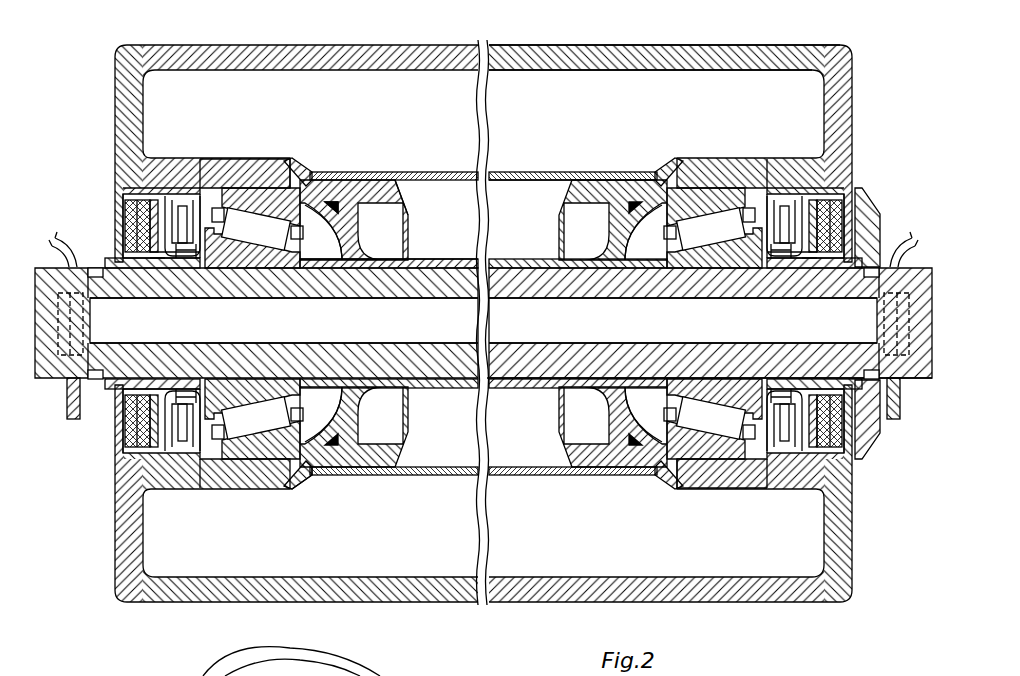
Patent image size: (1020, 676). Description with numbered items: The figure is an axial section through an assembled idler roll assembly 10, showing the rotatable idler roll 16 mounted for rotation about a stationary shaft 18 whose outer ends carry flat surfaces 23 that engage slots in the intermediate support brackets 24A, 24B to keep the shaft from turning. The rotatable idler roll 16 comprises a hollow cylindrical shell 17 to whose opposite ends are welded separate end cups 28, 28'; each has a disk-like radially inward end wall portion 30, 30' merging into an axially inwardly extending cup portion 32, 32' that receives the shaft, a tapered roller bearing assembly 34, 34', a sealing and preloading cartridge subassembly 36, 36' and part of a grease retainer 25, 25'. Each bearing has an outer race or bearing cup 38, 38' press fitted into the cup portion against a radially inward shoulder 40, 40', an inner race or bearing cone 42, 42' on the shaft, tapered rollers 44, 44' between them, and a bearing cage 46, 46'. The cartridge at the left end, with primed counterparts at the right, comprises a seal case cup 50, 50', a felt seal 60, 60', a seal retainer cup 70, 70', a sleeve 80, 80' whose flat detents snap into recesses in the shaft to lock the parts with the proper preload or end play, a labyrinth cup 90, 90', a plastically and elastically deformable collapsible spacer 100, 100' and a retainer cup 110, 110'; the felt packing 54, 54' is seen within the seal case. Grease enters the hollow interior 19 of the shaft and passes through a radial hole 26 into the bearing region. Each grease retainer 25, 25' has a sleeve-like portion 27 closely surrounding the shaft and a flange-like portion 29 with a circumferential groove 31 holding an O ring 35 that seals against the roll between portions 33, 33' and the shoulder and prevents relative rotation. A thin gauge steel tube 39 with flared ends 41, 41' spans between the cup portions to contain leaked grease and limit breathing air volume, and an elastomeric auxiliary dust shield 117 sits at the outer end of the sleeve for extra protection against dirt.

The idler roll assembly 10 is at (617, 43).
The idler roll 16 is at (685, 44).
The hollow cylindrical shell 17 is at (748, 44).
The stationary shaft 18 is at (493, 275).
The hollow interior 19 is at (524, 372).
The flat surfaces 23 is at (60, 352).
The intermediate support bracket 24A is at (67, 418).
The intermediate support bracket 24B is at (896, 420).
The grease retainer 25 is at (389, 229).
The grease retainer 25' is at (578, 287).
The radial hole 26 is at (337, 300).
The sleeve-like portion 27 is at (437, 258).
The end cup 28 is at (273, 323).
The end cup 28' is at (701, 323).
The flange-like portion 29 is at (356, 236).
The end wall portion 30 is at (106, 323).
The end wall portion 30' is at (865, 322).
The circumferential groove 31 is at (357, 203).
The cup portion 32 is at (240, 142).
The cup portion 32' is at (722, 491).
The portion of rotatable roll 33 is at (364, 460).
The portion of rotatable roll 33' is at (573, 167).
The tapered roller bearing assembly 34 is at (282, 287).
The tapered roller bearing assembly 34' is at (706, 275).
The O ring 35 is at (355, 175).
The sealing and preloading cartridge subassembly 36 is at (165, 296).
The sealing and preloading cartridge subassembly 36' is at (856, 183).
The bearing cup 38 is at (292, 151).
The bearing cup 38' is at (673, 157).
The thin gauge steel tube 39 is at (528, 172).
The shoulder 40 is at (343, 177).
The shoulder 40' is at (613, 301).
The flared end 41 is at (307, 489).
The flared end 41' is at (657, 486).
The bearing cone 42 is at (252, 323).
The bearing cone 42' is at (714, 323).
The tapered rollers 44 is at (269, 324).
The tapered rollers 44' is at (698, 324).
The bearing cage 46 is at (277, 323).
The bearing cage 46' is at (677, 323).
The seal case cup 50 is at (161, 152).
The seal case cup 50' is at (805, 159).
The packing 54 is at (113, 319).
The packing 54' is at (865, 306).
The felt seal 60 is at (157, 292).
The felt seal 60' is at (792, 297).
The seal retainer cup 70 is at (135, 307).
The seal retainer cup 70' is at (839, 295).
The sleeve 80 is at (138, 303).
The sleeve 80' is at (823, 323).
The labyrinth cup 90 is at (217, 295).
The labyrinth cup 90' is at (757, 293).
The collapsible spacer 100 is at (207, 323).
The collapsible spacer 100' is at (762, 323).
The retainer cup 110 is at (214, 278).
The retainer cup 110' is at (776, 276).
The auxiliary dust shield 117 is at (880, 232).